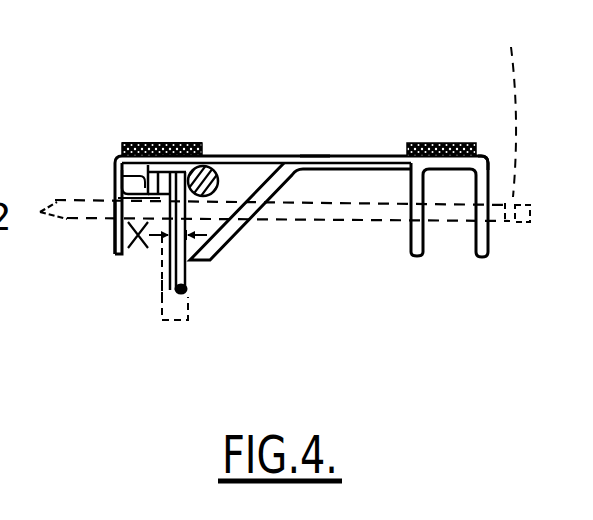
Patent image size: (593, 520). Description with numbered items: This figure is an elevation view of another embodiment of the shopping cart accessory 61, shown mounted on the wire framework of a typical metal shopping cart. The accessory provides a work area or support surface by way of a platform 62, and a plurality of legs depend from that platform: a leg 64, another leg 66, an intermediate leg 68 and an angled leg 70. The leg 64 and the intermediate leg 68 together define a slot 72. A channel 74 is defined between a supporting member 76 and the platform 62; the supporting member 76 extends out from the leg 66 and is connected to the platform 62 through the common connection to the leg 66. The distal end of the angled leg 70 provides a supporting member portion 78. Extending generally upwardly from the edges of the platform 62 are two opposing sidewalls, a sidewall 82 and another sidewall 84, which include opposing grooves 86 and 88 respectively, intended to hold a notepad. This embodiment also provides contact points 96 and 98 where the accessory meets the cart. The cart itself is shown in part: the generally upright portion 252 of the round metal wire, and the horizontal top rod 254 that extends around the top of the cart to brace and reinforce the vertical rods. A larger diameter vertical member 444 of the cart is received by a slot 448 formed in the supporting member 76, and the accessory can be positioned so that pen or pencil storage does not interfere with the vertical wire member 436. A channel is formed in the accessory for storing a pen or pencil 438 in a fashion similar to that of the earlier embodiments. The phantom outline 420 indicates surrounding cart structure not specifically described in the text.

The panel member (phantom) 420 is at (486, 117).
The groove 86 is at (471, 147).
The sidewall 82 is at (482, 142).
The groove 88 is at (137, 150).
The sidewall 84 is at (121, 142).
The slot 448 is at (173, 146).
The channel 74 is at (136, 179).
The supporting member 76 is at (130, 191).
The horizontal top rod 254 is at (216, 170).
The shopping cart accessory 61 is at (310, 153).
The platform 62 is at (314, 155).
The angled leg 70 is at (268, 198).
The intermediate leg 68 is at (411, 243).
The contact point 98 is at (118, 198).
The supporting member portion 78 is at (183, 231).
The contact point 96 is at (182, 289).
The slot 72 is at (452, 230).
The leg 64 is at (486, 249).
The pen or pencil 438 is at (99, 222).
The leg 66 is at (116, 255).
The vertical wire member 436 is at (150, 291).
The generally upright portion 252 is at (163, 284).
The larger diameter vertical member 444 is at (173, 323).